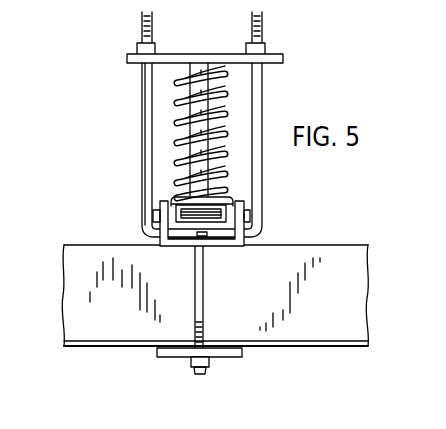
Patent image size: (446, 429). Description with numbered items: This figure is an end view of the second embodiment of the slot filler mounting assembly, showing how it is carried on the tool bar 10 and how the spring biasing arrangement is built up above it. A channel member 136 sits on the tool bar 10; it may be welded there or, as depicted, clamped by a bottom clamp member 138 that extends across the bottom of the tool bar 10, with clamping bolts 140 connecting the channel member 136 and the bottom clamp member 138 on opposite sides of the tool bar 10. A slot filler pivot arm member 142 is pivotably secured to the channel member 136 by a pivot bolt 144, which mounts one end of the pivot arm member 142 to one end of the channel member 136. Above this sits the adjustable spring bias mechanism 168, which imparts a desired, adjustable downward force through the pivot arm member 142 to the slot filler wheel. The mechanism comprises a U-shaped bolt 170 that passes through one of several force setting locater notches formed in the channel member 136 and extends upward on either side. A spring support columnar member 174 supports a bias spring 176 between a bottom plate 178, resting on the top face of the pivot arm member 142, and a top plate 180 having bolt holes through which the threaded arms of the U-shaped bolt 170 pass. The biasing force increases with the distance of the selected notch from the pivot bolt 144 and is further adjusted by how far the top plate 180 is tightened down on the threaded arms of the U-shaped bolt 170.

The tool bar 10 is at (78, 293).
The channel member 136 is at (219, 252).
The bottom clamp member 138 is at (240, 360).
The clamping bolts 140 is at (204, 305).
The slot filler pivot arm member 142 is at (185, 252).
The pivot bolt 144 is at (236, 204).
The adjustable spring bias mechanism 168 is at (126, 113).
The U-shaped bolt 170 is at (263, 123).
The spring support columnar member 174 is at (190, 152).
The bias spring 176 is at (178, 121).
The bottom plate 178 is at (227, 199).
The top plate 180 is at (180, 53).